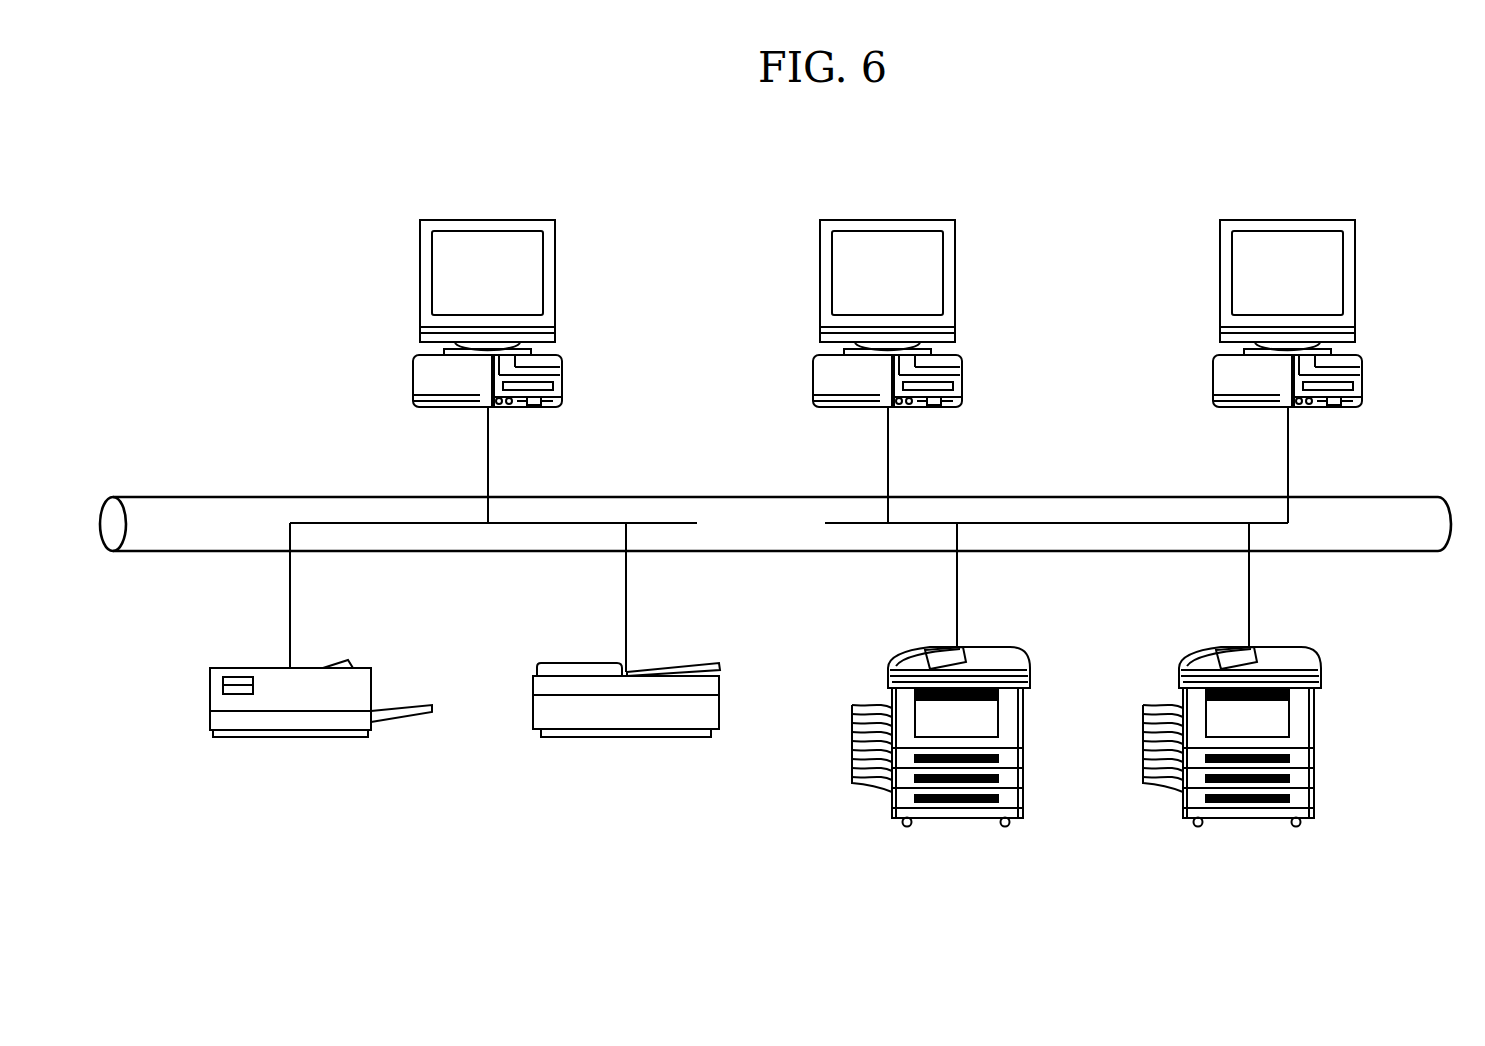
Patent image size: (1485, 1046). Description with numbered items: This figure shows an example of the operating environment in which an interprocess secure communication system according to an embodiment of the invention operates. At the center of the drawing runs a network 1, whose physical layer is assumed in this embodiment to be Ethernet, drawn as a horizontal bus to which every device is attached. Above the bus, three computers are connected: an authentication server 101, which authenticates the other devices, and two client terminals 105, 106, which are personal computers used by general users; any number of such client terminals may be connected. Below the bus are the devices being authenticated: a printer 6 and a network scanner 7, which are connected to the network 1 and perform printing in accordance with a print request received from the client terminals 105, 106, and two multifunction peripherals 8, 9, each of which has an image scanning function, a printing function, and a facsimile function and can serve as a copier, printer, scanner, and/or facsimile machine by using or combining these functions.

The network 1 is at (741, 497).
The authentication server 101 is at (468, 220).
The client terminal 105 is at (868, 220).
The client terminal 106 is at (1268, 220).
The printer 6 is at (238, 739).
The network scanner 7 is at (570, 739).
The multifunction peripheral 8 is at (942, 820).
The multifunction peripheral 9 is at (1234, 820).